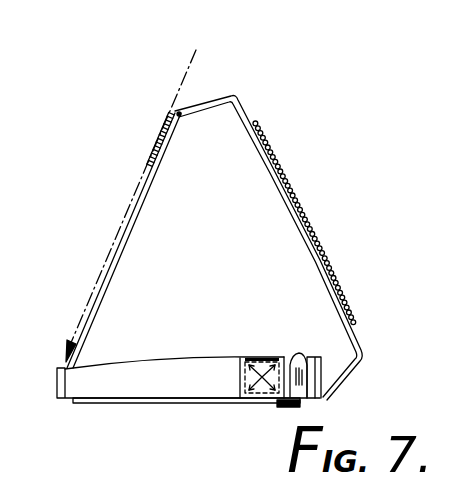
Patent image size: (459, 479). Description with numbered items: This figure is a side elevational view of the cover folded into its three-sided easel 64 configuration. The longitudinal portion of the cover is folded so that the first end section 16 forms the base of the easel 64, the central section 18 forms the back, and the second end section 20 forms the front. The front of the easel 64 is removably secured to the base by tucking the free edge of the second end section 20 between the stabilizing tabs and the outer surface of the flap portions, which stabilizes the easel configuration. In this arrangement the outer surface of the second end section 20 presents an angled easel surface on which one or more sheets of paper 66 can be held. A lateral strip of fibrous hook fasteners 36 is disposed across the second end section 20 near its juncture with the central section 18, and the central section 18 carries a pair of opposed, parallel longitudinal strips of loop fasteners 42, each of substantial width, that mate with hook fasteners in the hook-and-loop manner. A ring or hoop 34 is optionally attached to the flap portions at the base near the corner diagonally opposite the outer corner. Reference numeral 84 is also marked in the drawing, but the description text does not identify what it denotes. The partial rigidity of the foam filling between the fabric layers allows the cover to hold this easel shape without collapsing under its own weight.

The first end section 16 is at (157, 404).
The central section 18 is at (251, 117).
The second end section 20 is at (129, 238).
The ring or hoop 34 is at (286, 355).
The lateral strip of fibrous hook fasteners 36 is at (181, 115).
The longitudinal strips of loop fasteners 42 is at (311, 222).
The three-sided easel 64 is at (104, 207).
The sheets of paper 66 is at (189, 66).
The direction indicator 84 is at (138, 40).